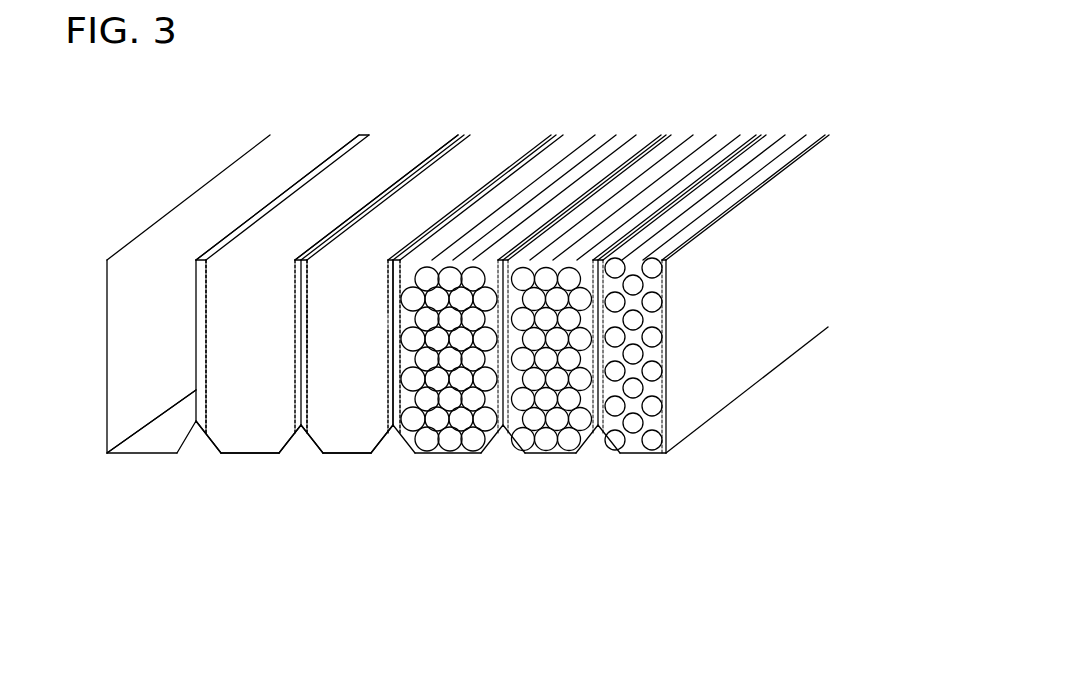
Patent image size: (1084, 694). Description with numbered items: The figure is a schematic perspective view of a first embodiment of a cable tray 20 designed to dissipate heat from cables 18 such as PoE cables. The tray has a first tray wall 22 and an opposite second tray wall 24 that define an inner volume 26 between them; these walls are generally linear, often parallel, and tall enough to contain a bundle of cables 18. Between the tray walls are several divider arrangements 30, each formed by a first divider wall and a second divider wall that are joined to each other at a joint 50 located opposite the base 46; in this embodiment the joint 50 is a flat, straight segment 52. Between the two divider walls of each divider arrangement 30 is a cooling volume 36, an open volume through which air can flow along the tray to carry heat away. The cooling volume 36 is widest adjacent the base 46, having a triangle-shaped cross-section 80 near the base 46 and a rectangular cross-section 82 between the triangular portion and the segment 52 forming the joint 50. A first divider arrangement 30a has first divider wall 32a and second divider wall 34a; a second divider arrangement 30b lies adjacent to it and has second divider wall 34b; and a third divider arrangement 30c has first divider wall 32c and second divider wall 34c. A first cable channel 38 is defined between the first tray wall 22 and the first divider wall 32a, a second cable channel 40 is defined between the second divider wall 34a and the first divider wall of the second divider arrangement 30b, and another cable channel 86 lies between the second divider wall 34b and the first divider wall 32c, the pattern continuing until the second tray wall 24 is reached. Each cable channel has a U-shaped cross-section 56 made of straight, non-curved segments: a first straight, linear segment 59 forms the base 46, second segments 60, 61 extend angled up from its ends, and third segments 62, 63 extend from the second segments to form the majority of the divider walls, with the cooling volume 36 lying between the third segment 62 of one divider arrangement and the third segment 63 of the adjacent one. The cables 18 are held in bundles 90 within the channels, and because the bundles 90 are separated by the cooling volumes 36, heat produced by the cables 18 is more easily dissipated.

The cables 18 is at (538, 202).
The cable tray 20 is at (880, 157).
The first tray wall 22 is at (106, 358).
The second tray wall 24 is at (720, 383).
The inner volume 26 is at (217, 187).
The divider arrangement 30 is at (277, 197).
The first divider arrangement 30a is at (312, 172).
The second divider arrangement 30b is at (413, 168).
The third divider arrangement 30c is at (488, 183).
The first divider wall 32a is at (195, 392).
The first divider wall 32c is at (390, 363).
The second divider wall 34a is at (208, 357).
The second divider wall 34b is at (293, 388).
The second divider wall 34c is at (503, 181).
The cooling volume 36 is at (197, 442).
The first cable channel 38 is at (152, 434).
The second cable channel 40 is at (255, 446).
The base 46 is at (557, 442).
The joint 50 is at (250, 227).
The flat, straight segment 52 is at (228, 240).
The U-shaped cross-section 56 is at (368, 160).
The first straight, linear segment 59 is at (230, 453).
The second segment 60 is at (213, 437).
The second segment 61 is at (287, 437).
The third segment 62 is at (206, 330).
The third segment 63 is at (300, 330).
The triangle-shaped cross-section 80 is at (385, 452).
The rectangular cross-section 82 is at (200, 315).
The cable channel 86 is at (353, 428).
The bundles 90 is at (463, 455).